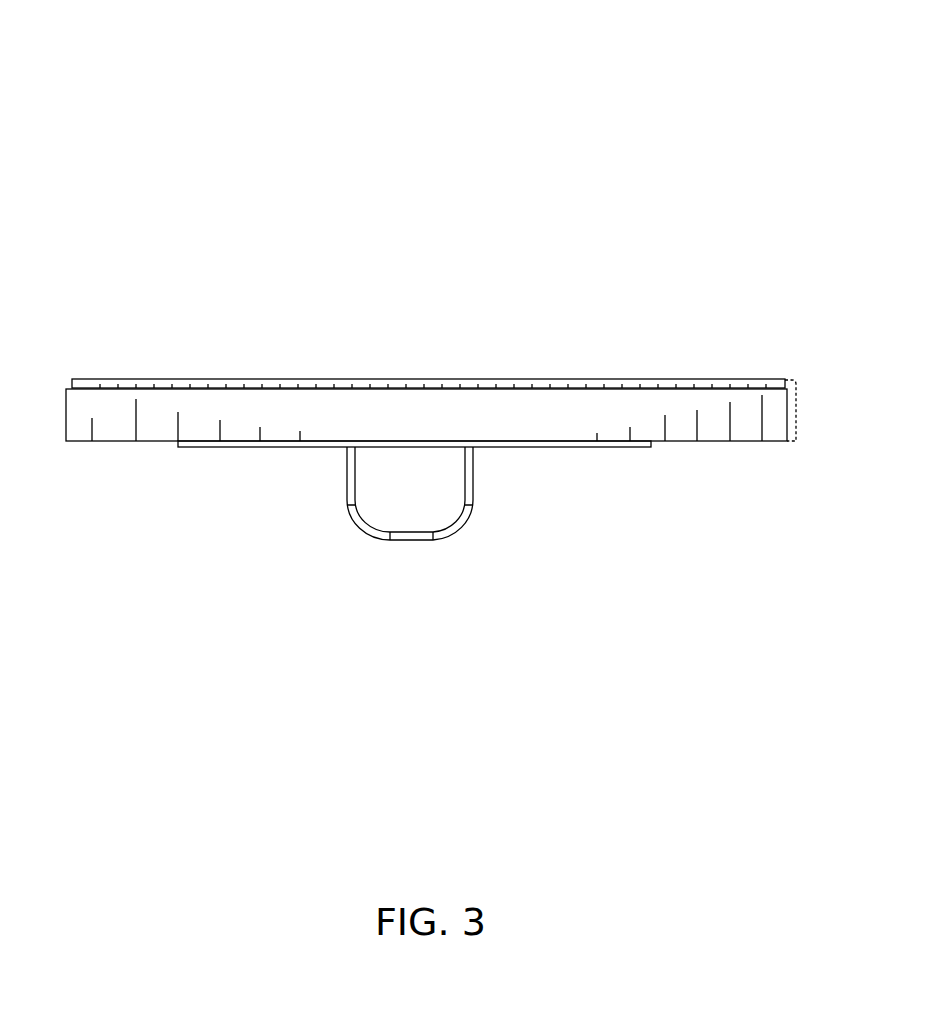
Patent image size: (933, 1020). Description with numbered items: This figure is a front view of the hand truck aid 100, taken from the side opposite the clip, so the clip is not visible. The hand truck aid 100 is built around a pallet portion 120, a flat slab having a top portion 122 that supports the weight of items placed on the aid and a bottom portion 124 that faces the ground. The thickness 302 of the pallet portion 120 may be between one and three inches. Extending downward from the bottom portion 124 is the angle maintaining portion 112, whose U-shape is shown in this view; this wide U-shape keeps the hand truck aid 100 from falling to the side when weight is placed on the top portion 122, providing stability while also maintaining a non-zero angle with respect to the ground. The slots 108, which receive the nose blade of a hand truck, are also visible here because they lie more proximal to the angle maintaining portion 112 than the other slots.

The hand truck aid 100 is at (840, 33).
The slots 108 is at (608, 448).
The angle maintaining portion 112 is at (390, 538).
The pallet portion 120 is at (595, 388).
The top portion 122 is at (457, 348).
The bottom portion 124 is at (520, 478).
The thickness 302 is at (797, 405).